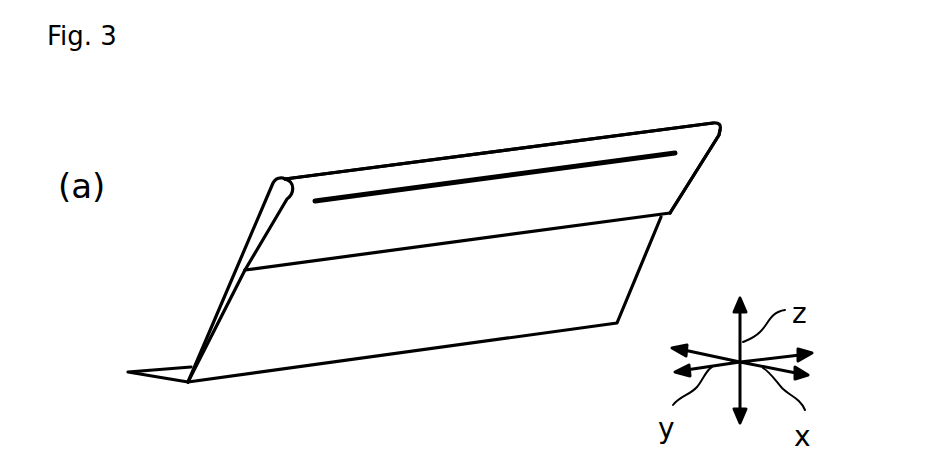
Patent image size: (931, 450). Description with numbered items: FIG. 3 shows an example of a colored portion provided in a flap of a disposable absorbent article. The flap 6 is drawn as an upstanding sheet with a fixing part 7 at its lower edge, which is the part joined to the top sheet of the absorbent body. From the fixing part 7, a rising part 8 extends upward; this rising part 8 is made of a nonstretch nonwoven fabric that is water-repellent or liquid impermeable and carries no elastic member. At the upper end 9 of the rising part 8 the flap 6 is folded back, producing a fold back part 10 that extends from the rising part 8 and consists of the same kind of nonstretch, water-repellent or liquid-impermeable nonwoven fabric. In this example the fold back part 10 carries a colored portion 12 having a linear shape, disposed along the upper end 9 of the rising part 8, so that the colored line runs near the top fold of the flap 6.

The flap 6 is at (231, 219).
The fixing part 7 is at (182, 373).
The rising part 8 is at (221, 300).
The upper end 9 is at (453, 153).
The fold back part 10 is at (670, 187).
The colored portion 12 is at (375, 188).